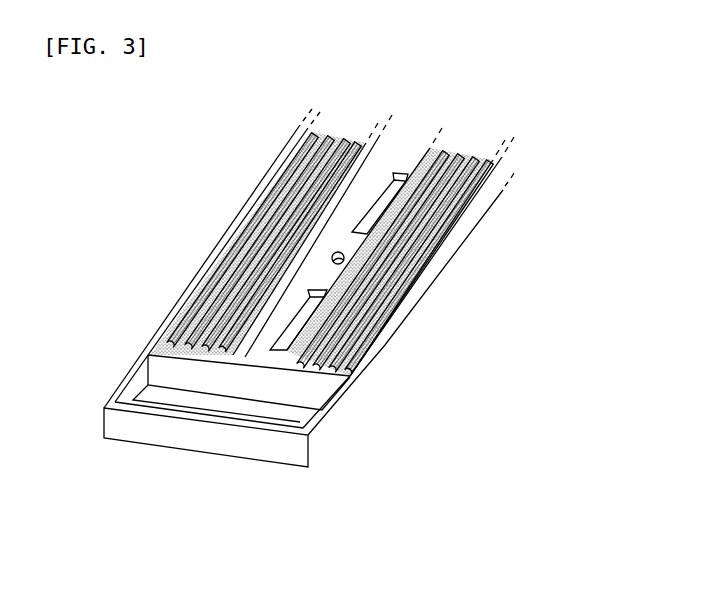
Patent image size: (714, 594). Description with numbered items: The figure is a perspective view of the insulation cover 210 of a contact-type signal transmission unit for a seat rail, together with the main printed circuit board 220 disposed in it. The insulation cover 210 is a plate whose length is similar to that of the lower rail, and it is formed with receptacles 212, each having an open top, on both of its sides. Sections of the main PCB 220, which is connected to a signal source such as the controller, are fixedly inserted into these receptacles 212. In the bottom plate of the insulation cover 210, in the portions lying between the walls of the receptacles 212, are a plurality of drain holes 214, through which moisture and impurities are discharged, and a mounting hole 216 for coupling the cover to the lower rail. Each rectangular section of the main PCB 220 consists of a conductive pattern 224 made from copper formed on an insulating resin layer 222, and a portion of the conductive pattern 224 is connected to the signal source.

The insulation cover 210 is at (179, 432).
The receptacle 212 is at (252, 356).
The drain hole 214 is at (288, 337).
The mounting hole 216 is at (337, 252).
The main printed circuit board 220 is at (321, 243).
The insulating resin layer 222 is at (232, 246).
The conductive pattern 224 is at (212, 285).